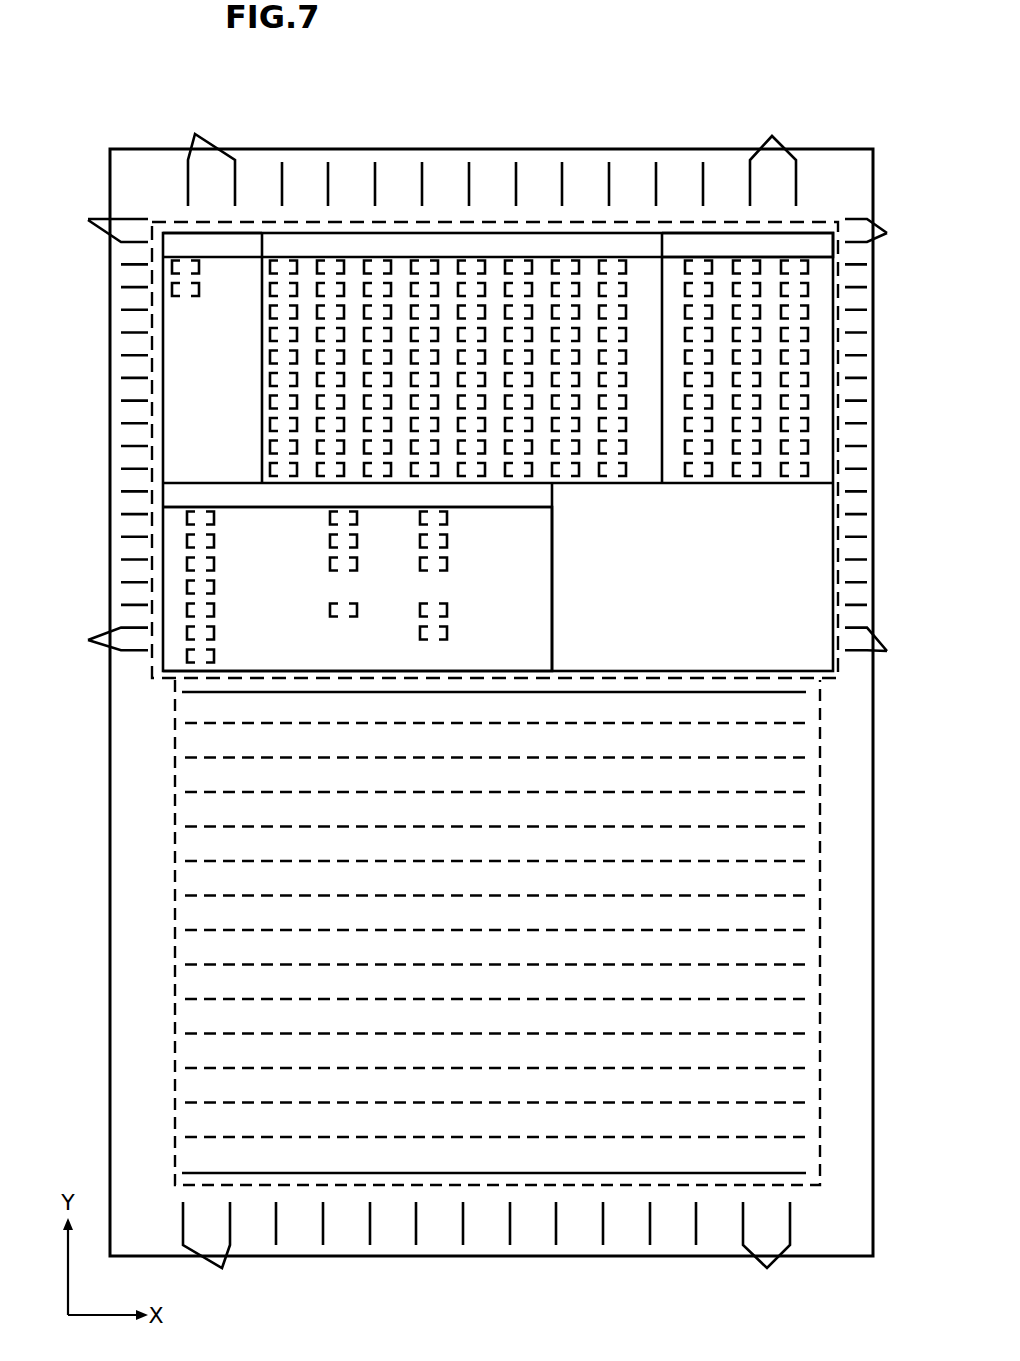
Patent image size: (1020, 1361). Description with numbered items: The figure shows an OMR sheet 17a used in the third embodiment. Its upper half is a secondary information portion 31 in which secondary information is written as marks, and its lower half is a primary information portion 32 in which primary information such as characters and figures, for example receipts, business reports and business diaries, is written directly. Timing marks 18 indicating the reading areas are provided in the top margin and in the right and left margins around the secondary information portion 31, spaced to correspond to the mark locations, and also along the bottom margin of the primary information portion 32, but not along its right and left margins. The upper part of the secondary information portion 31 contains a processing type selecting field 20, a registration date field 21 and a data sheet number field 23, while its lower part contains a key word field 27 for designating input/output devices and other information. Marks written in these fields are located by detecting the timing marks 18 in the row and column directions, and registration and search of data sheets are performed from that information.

The OMR sheet 17a is at (862, 142).
The timing marks 18 is at (487, 703).
The processing type selecting field 20 is at (180, 238).
The registration date field 21 is at (447, 238).
The data sheet number field 23 is at (805, 242).
The key word field 27 is at (172, 496).
The secondary information portion 31 is at (528, 224).
The primary information portion 32 is at (154, 894).